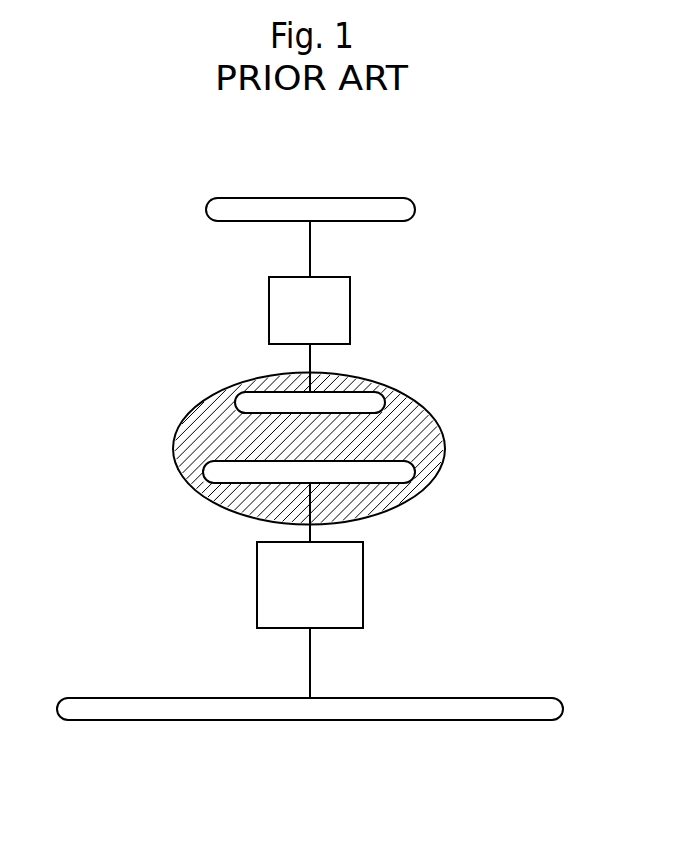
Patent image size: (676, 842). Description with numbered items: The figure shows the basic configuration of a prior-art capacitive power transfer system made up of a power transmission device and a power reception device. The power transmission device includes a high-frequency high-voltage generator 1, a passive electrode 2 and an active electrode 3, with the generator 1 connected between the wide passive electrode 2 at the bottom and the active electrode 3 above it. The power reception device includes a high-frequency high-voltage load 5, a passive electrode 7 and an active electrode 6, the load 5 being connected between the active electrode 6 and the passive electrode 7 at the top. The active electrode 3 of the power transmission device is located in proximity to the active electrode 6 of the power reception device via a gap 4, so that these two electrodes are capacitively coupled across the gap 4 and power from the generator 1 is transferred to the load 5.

The high-frequency high-voltage generator 1 is at (363, 582).
The passive electrode 2 is at (488, 698).
The active electrode 3 is at (398, 472).
The gap 4 is at (423, 440).
The high-frequency high-voltage load 5 is at (350, 308).
The active electrode 6 is at (377, 403).
The passive electrode 7 is at (379, 198).